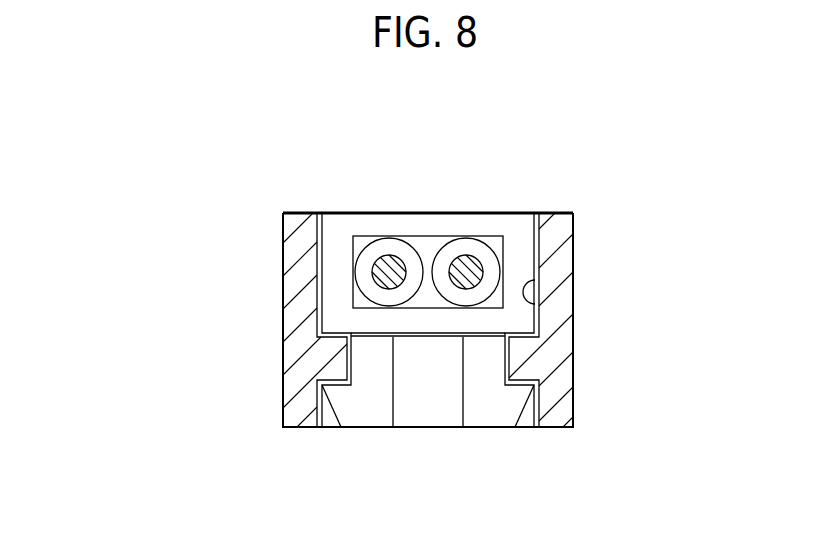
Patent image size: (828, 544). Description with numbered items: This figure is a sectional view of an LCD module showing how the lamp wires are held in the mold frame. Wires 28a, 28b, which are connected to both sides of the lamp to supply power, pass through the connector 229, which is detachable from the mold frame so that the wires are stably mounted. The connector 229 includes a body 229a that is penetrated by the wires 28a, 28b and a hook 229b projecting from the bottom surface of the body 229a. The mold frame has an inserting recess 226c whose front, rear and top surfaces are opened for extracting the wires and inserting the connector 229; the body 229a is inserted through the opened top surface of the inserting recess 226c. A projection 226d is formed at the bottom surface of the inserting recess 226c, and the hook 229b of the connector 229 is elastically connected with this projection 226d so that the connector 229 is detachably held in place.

The connector 229 is at (423, 212).
The body 229a is at (348, 244).
The hook 229b is at (488, 413).
The wire 28a is at (363, 283).
The wire 28b is at (472, 247).
The inserting recess 226c is at (528, 306).
The projection 226d is at (343, 390).